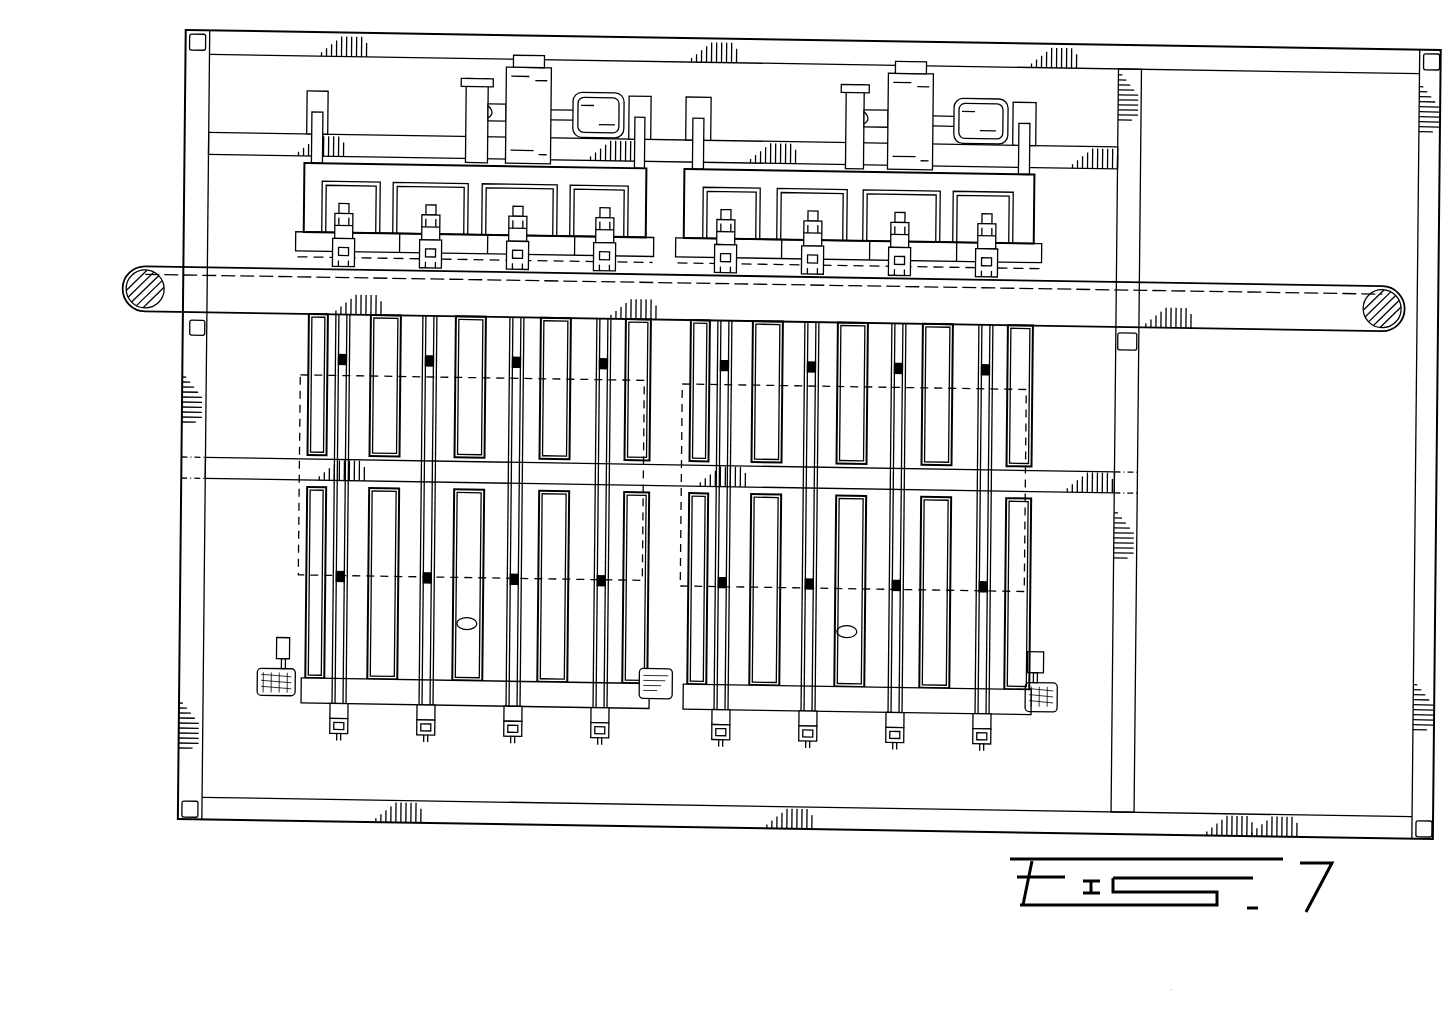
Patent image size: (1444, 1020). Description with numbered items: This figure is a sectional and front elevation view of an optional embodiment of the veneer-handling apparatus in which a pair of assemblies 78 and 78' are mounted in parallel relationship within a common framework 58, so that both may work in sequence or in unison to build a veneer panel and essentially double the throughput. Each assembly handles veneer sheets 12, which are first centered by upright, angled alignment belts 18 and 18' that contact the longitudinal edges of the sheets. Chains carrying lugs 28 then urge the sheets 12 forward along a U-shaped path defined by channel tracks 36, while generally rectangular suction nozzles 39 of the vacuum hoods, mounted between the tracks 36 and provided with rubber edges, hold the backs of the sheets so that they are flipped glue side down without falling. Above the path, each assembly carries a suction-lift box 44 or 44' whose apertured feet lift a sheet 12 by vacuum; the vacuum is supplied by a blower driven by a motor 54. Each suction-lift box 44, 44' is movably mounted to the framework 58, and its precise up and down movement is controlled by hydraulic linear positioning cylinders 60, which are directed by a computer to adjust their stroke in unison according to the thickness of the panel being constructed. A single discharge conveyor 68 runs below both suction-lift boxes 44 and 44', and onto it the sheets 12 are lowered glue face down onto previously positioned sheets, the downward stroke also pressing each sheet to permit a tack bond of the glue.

The veneer sheets 12 is at (304, 420).
The alignment belts 18 is at (648, 701).
The alignment belt 18' is at (650, 718).
The lugs 28 is at (515, 732).
The channel tracks 36 is at (420, 720).
The suction nozzles 39 is at (858, 338).
The suction-lift box 44 is at (439, 217).
The suction-lift box 44' is at (898, 224).
The motor 54 is at (611, 86).
The framework 58 is at (1427, 137).
The hydraulic linear positioning cylinders 60 is at (319, 120).
The discharge conveyor 68 is at (1403, 265).
The assembly 78 is at (383, 510).
The assembly 78' is at (950, 518).